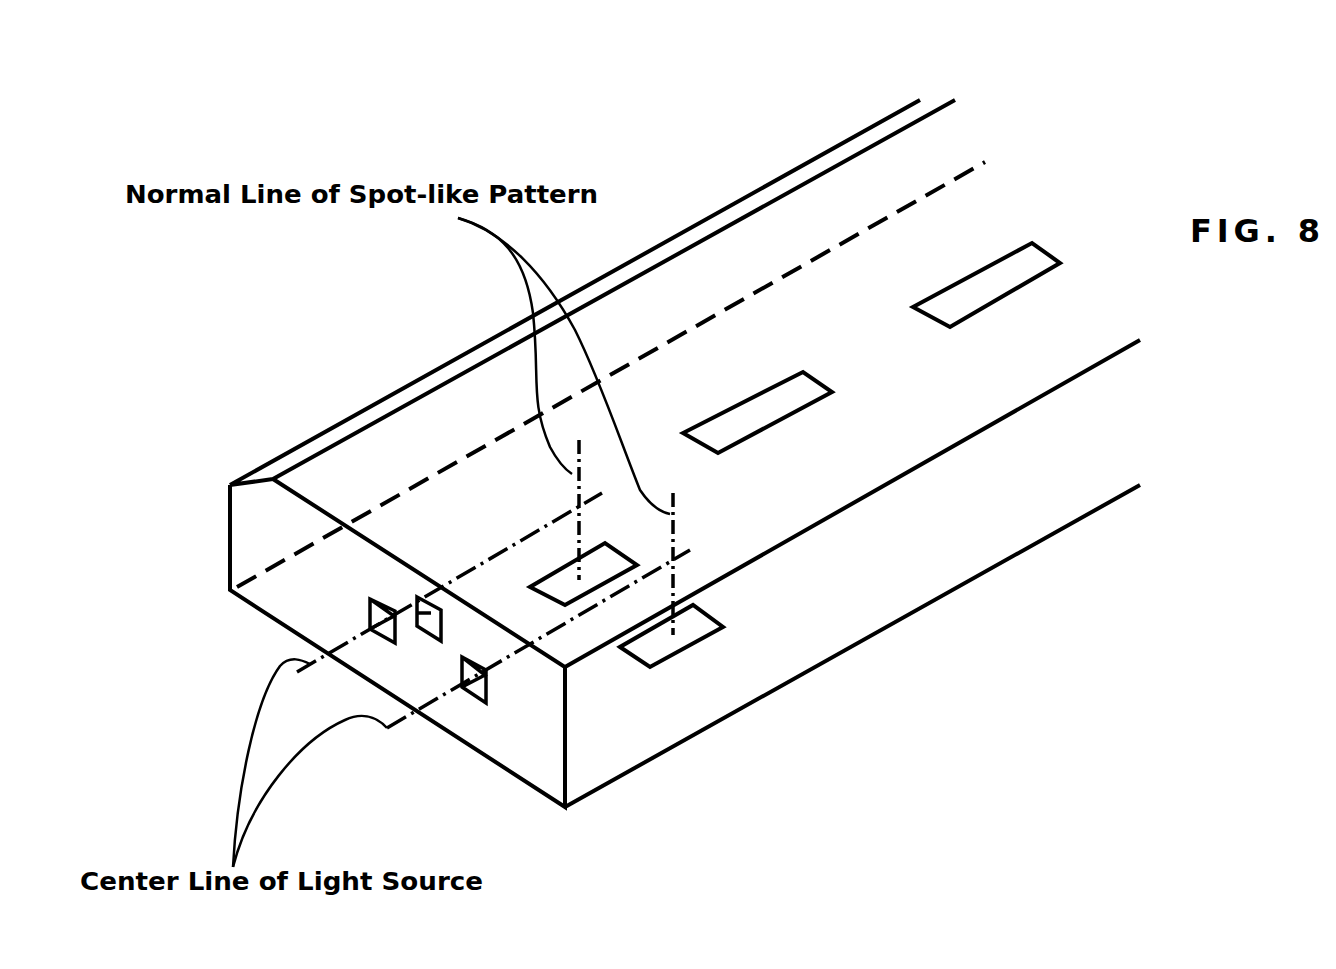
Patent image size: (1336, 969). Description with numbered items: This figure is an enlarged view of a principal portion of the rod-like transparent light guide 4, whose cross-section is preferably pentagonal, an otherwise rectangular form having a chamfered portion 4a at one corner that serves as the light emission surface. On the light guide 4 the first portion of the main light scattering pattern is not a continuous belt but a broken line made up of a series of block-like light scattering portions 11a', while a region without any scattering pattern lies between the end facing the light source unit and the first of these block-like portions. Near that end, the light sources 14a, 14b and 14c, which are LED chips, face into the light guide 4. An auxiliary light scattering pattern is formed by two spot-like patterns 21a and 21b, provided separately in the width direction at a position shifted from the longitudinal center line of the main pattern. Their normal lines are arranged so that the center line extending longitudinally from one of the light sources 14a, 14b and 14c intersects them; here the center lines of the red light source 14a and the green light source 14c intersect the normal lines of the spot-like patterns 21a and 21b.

The rod-like transparent light guide 4 is at (960, 513).
The chamfered portion 4a is at (755, 206).
The block-like light scattering portion 11a' is at (905, 254).
The light source 14a is at (372, 616).
The light source 14b is at (413, 603).
The light source 14c is at (470, 685).
The spot-like pattern 21a is at (600, 570).
The spot-like pattern 21b is at (655, 647).